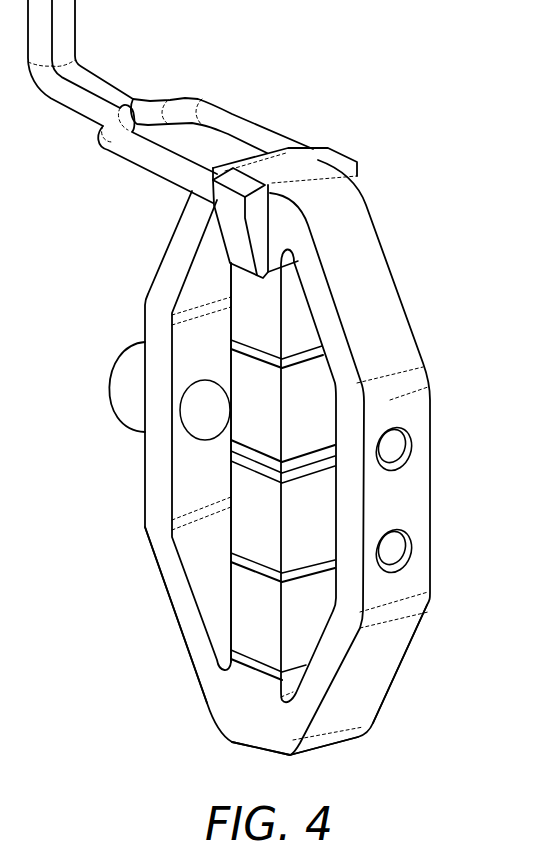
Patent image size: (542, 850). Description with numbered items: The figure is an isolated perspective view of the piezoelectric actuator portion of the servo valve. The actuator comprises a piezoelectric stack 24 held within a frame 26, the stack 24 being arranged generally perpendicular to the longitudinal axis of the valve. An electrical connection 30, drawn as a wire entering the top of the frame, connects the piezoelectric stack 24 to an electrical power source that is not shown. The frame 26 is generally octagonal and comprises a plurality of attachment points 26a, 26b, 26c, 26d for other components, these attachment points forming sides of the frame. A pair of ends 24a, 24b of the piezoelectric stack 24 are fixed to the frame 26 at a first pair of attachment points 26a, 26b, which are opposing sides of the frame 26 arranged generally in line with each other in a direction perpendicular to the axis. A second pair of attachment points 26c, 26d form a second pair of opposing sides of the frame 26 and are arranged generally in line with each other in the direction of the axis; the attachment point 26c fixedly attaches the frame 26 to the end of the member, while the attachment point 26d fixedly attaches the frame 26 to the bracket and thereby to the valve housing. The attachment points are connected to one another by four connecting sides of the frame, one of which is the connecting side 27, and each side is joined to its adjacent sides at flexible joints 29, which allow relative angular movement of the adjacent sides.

The piezoelectric stack 24 is at (316, 384).
The end of the piezoelectric stack 24a is at (283, 267).
The end of the piezoelectric stack 24b is at (224, 660).
The frame 26 is at (428, 373).
The attachment point 26a is at (275, 210).
The attachment point 26b is at (240, 724).
The attachment point 26c is at (147, 322).
The attachment point 26d is at (420, 496).
The connecting side 27 is at (167, 585).
The flexible joint 29 is at (421, 603).
The electrical connection 30 is at (177, 98).